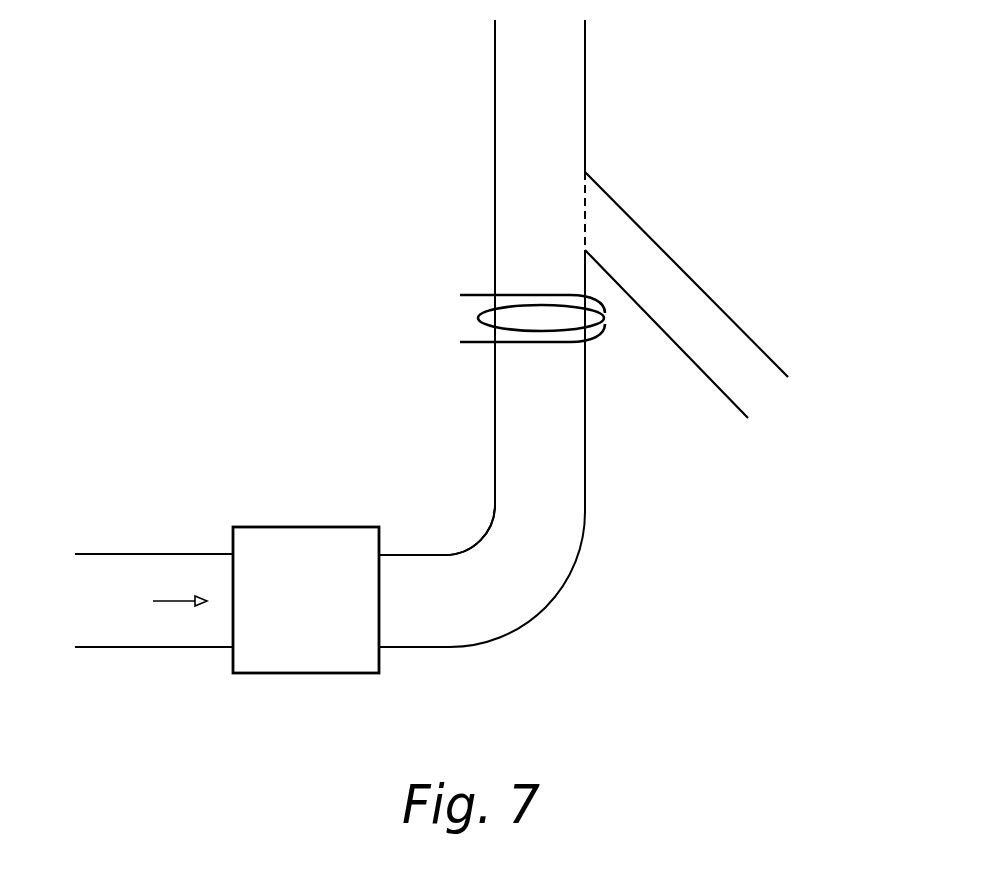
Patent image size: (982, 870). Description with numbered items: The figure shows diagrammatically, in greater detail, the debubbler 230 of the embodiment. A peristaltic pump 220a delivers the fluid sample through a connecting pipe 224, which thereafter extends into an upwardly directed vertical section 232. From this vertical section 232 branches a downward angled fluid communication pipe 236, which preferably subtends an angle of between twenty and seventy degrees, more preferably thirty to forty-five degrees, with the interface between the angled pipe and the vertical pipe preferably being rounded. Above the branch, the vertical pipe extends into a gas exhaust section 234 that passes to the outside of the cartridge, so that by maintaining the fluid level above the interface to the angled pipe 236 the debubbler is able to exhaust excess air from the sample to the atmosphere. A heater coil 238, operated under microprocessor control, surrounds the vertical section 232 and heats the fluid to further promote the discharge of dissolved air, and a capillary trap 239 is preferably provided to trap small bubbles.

The peristaltic pump 220a is at (355, 530).
The connecting pipe 224 is at (547, 590).
The flow-through assembly 230 is at (668, 128).
The vertical section 232 is at (495, 392).
The gas exhaust section 234 is at (580, 71).
The downward angled fluid communication pipe 236 is at (752, 347).
The heater coil 238 is at (483, 295).
The capillary trap 239 is at (585, 193).